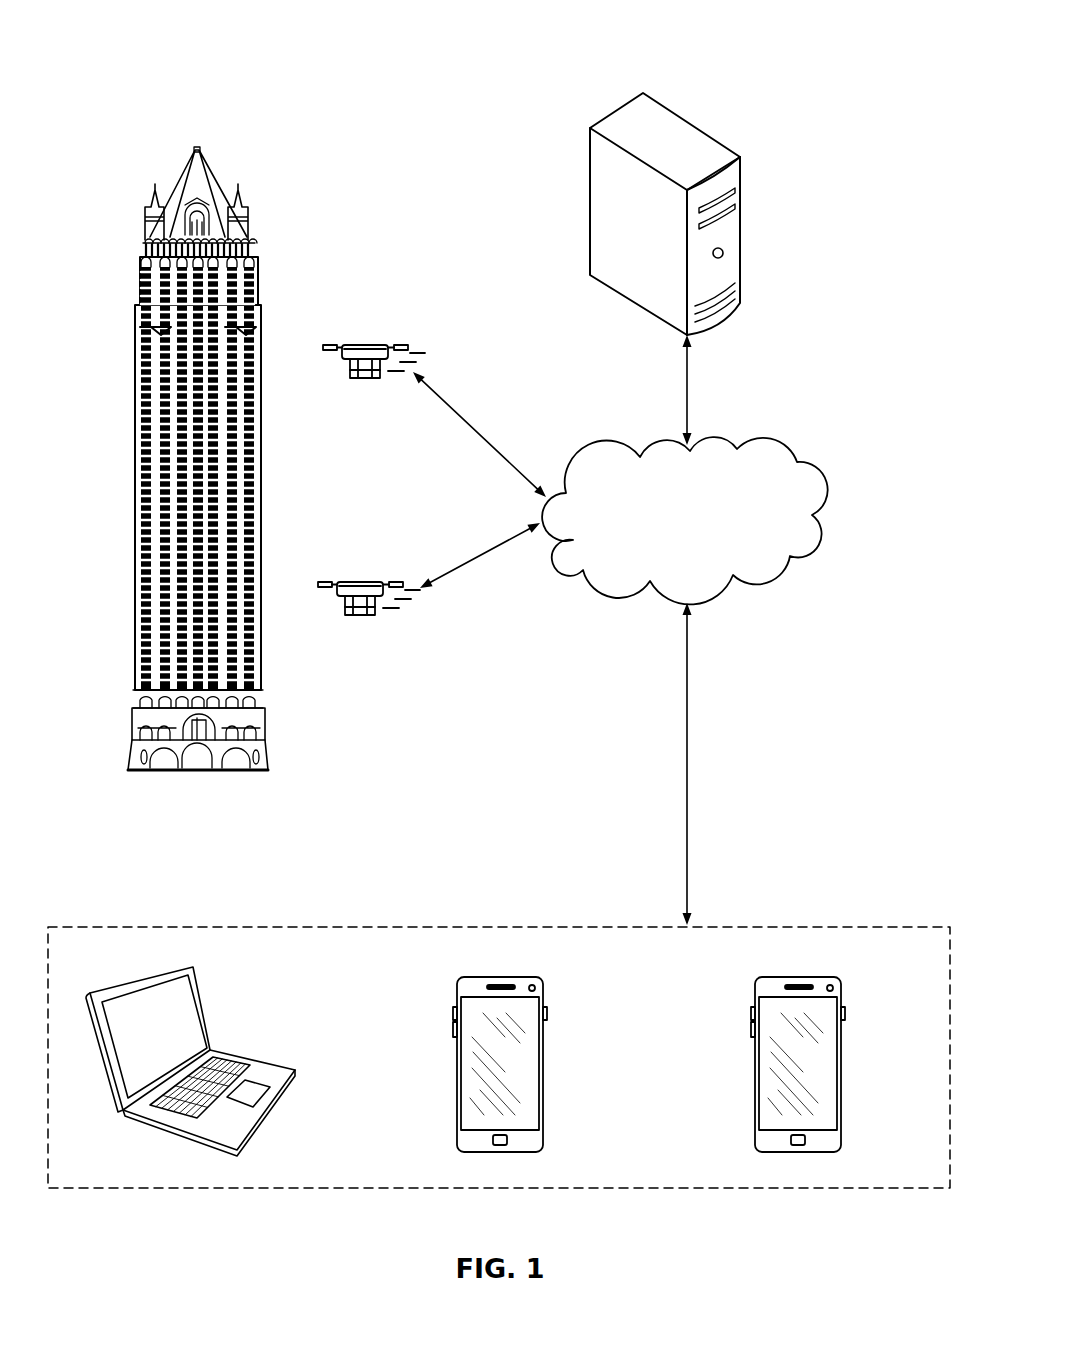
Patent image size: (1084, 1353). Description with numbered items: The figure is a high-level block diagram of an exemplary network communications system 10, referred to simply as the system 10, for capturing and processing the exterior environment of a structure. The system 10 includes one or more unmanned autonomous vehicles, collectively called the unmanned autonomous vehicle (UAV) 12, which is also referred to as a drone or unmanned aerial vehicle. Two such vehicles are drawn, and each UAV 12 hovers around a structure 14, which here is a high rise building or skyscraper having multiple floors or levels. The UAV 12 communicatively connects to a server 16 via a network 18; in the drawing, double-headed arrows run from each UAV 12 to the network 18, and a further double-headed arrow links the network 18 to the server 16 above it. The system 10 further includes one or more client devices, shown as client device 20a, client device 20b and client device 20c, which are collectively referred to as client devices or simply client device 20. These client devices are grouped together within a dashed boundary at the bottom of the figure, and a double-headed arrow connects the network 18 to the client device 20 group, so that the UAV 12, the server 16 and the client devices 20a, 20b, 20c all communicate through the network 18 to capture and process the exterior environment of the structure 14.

The network communications system 10 is at (175, 66).
The unmanned autonomous vehicle 12 is at (365, 345).
The structure 14 is at (143, 393).
The server 16 is at (690, 118).
The network 18 is at (770, 440).
The client device 20 is at (727, 927).
The client device 20a is at (170, 967).
The client device 20b is at (520, 977).
The client device 20c is at (820, 977).